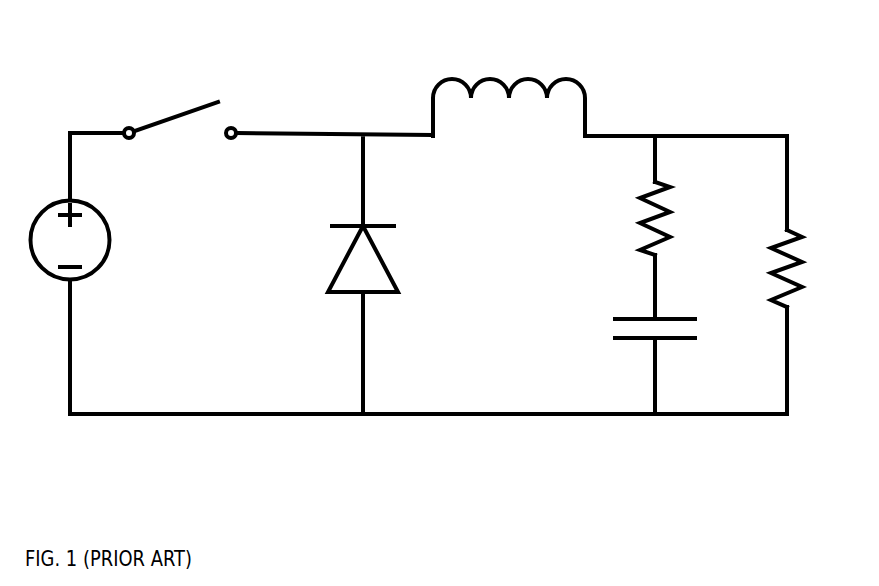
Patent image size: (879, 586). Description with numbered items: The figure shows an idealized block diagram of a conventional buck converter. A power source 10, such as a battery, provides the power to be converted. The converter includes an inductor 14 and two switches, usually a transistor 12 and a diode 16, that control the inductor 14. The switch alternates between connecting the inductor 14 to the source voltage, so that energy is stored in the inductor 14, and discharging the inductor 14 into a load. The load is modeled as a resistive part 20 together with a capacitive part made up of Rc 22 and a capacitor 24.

The power source 10 is at (105, 240).
The transistor 12 is at (180, 95).
The inductor 14 is at (509, 76).
The diode 16 is at (390, 259).
The resistive part 20 is at (815, 268).
The Rc 22 is at (611, 218).
The capacitor 24 is at (623, 328).